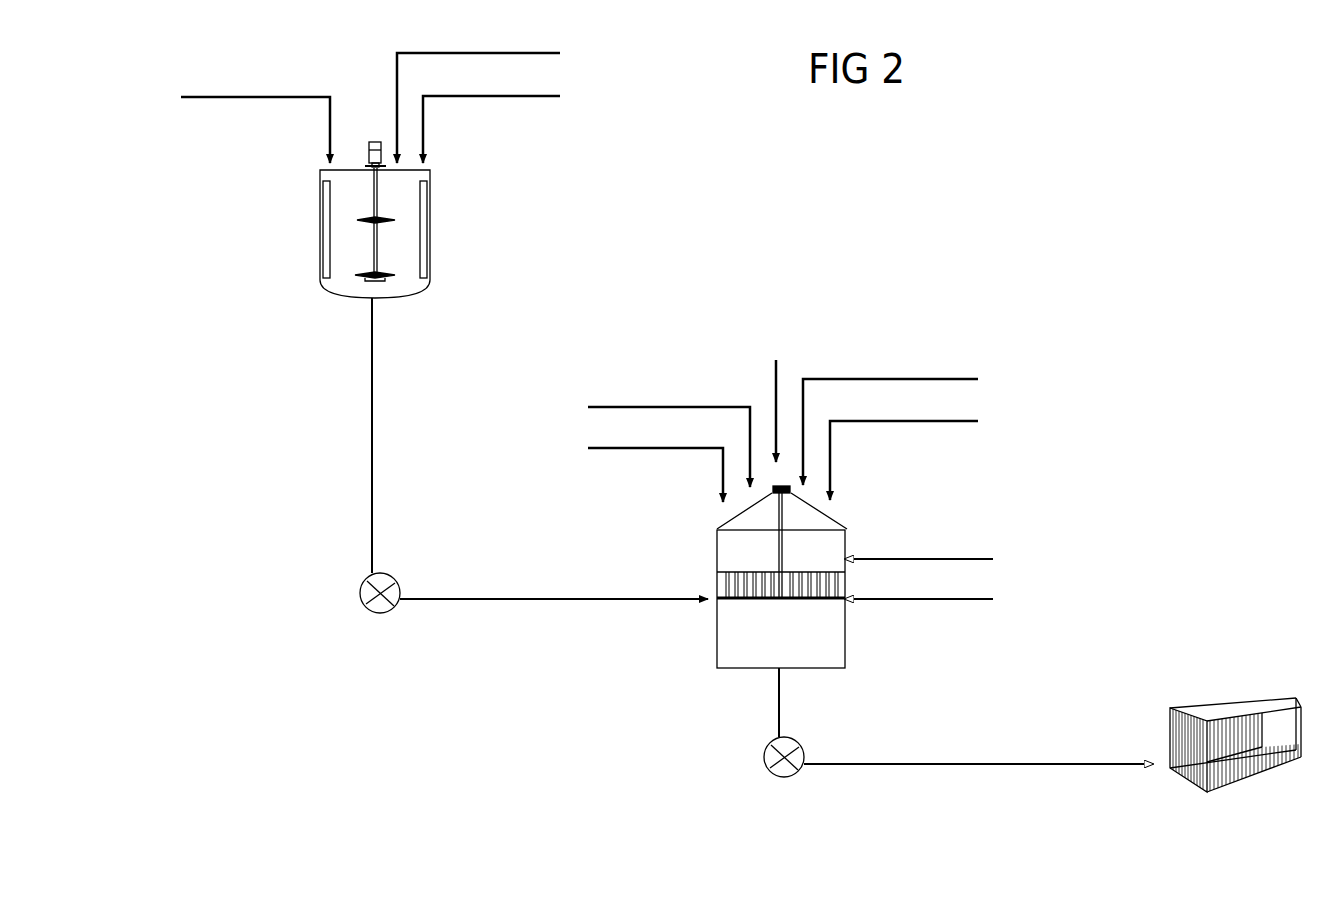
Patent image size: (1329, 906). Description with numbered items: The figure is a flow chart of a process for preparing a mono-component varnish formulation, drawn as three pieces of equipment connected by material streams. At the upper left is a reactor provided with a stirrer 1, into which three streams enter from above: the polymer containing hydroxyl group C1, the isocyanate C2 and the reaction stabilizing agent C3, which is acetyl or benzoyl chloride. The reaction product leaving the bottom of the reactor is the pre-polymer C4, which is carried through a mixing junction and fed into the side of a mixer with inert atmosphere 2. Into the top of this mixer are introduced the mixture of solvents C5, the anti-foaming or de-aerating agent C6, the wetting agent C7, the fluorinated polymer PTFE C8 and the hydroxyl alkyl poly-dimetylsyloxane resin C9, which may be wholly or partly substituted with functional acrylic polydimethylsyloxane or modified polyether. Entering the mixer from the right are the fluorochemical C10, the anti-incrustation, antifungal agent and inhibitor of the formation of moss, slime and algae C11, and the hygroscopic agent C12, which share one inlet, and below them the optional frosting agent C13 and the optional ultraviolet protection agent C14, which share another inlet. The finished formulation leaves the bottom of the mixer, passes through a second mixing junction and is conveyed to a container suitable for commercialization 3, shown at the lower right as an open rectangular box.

The reactor provided with a stirrer 1 is at (394, 357).
The mixer with inert atmosphere 2 is at (803, 611).
The container suitable for commercialization 3 is at (1235, 735).
The polymer containing hydroxyl group C1 is at (255, 117).
The isocyanate C2 is at (478, 96).
The reaction stabilizing agent C3 is at (491, 117).
The pre-polymer C4 is at (554, 587).
The mixture of solvents C5 is at (655, 463).
The anti-foaming or de-aerating agent C6 is at (669, 435).
The wetting agent C7 is at (772, 398).
The fluorinated polymer PTFE C8 is at (890, 420).
The hydroxyl alkyl poly-dimetylsyloxane resin C9 is at (904, 448).
The fluorochemical C10 is at (924, 546).
The anti-incrustation, antifungal agent, and inhibitor of the formation of moss, sli C11 is at (924, 546).
The hygroscopic agent C12 is at (924, 546).
The frosting agent C13 is at (919, 587).
The ultraviolet protection agent C14 is at (919, 587).